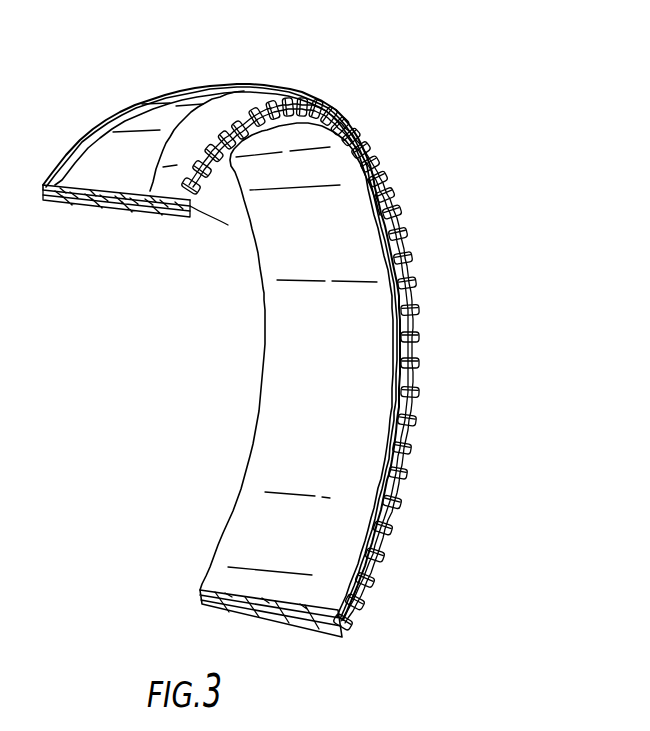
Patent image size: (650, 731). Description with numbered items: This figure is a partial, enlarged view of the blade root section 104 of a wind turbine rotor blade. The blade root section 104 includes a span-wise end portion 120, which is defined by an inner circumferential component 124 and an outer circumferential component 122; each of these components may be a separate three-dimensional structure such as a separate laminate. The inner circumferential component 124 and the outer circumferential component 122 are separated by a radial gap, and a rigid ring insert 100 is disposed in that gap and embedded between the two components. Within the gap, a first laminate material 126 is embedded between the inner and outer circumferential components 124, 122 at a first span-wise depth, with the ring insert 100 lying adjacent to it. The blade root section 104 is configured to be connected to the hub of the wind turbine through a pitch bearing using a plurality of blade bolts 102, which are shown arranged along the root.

The ring insert 100 is at (147, 203).
The blade bolts 102 is at (193, 188).
The blade root section 104 is at (495, 157).
The span-wise end portion 120 is at (173, 112).
The outer circumferential component 122 is at (106, 212).
The inner circumferential component 124 is at (133, 207).
The first laminate material 126 is at (113, 203).